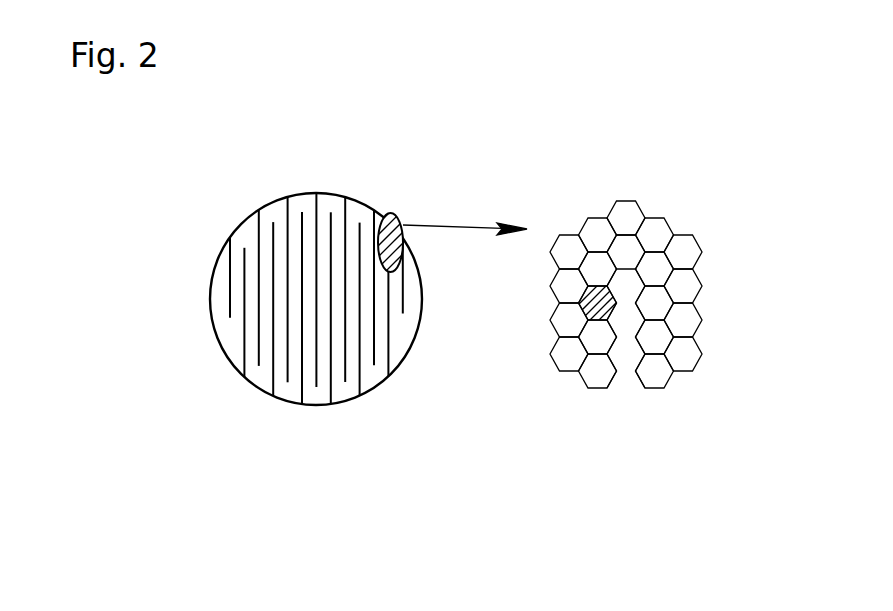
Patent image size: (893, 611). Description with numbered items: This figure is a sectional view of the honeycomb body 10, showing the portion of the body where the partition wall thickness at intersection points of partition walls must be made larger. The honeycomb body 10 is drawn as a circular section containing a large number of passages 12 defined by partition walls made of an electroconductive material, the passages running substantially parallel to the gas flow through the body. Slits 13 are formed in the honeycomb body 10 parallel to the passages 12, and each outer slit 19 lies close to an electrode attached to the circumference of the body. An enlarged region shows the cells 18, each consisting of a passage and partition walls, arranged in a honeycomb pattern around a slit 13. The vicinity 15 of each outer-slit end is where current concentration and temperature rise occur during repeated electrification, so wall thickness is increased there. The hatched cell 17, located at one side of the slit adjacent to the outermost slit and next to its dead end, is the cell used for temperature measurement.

The honeycomb body 10 is at (205, 354).
The passages 12 is at (687, 253).
The slits 13 is at (623, 360).
The vicinity of each outer-slit end 15 is at (655, 296).
The cell 17 is at (585, 308).
The cells 18 is at (683, 362).
The outer slit 19 is at (399, 216).